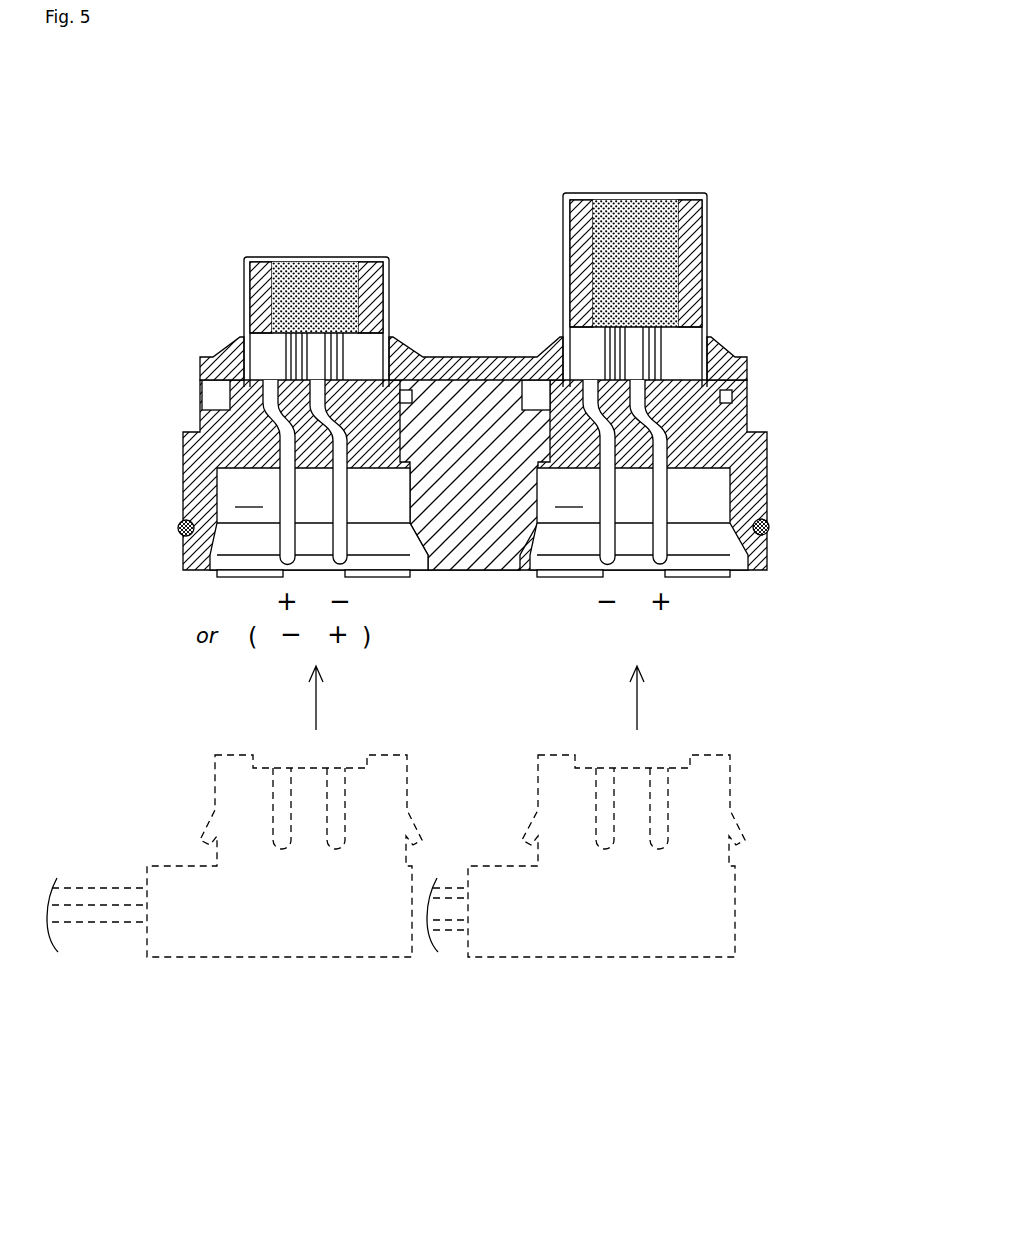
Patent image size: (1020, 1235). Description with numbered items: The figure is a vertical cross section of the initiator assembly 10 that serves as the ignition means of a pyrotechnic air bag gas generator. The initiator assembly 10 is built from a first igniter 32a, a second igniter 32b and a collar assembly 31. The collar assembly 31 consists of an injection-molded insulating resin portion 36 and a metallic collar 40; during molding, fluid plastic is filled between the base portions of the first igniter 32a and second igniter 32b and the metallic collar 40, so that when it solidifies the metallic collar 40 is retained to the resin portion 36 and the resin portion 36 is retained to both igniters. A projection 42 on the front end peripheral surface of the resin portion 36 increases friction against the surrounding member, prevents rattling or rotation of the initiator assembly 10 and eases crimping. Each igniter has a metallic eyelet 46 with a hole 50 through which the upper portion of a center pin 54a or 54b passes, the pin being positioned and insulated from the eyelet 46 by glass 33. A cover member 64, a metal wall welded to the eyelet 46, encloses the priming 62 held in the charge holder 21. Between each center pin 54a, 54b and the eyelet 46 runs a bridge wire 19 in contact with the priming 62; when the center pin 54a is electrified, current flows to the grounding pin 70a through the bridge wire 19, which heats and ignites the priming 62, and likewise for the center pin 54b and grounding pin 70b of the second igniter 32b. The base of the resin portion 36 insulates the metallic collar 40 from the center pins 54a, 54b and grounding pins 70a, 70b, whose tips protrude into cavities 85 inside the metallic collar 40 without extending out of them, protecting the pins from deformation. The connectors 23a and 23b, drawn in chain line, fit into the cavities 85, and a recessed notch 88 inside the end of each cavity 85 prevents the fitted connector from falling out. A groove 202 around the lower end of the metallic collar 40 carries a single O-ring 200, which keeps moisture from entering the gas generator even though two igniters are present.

The initiator assembly 10 is at (477, 183).
The bridge wire 19 is at (297, 322).
The charge holder 21 is at (690, 221).
The first igniter connector 23a is at (297, 937).
The second igniter connector 23b is at (617, 937).
The collar assembly 31 is at (100, 305).
The first igniter 32a is at (317, 250).
The second igniter 32b is at (641, 183).
The glass 33 is at (350, 362).
The resin portion 36 is at (217, 351).
The metallic collar 40 is at (203, 383).
The projection 42 is at (750, 366).
The metallic eyelet 46 is at (263, 352).
The hole 50 is at (352, 356).
The center pin 54a is at (340, 457).
The center pin 54b is at (660, 497).
The priming 62 is at (344, 270).
The cover member 64 is at (262, 257).
The grounding pin 70a is at (280, 418).
The grounding pin 70b is at (603, 472).
The cavity 85 is at (409, 496).
The recessed notch 88 is at (215, 556).
The O-ring 200 is at (186, 536).
The groove 202 is at (765, 527).